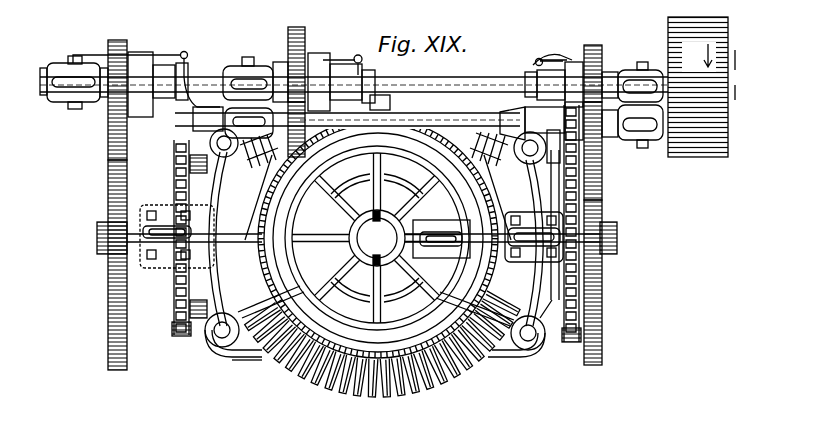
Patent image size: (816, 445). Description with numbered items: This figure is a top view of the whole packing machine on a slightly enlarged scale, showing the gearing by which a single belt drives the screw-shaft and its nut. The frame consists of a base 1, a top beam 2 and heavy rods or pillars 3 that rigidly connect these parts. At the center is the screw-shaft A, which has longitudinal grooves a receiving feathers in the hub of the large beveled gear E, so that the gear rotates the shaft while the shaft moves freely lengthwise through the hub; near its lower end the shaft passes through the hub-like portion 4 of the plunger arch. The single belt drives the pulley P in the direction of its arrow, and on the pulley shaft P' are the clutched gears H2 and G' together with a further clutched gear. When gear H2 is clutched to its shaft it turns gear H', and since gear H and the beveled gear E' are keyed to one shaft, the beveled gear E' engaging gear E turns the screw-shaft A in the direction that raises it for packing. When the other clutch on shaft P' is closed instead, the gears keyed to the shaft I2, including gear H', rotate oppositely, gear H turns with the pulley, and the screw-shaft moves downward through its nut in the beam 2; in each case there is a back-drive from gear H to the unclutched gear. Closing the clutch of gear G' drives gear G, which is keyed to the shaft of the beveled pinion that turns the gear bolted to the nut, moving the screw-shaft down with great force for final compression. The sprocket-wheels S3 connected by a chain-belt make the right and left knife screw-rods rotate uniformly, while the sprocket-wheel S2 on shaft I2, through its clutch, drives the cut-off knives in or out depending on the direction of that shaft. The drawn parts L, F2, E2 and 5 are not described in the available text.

The beveled gear E is at (382, 257).
The screw-shaft A is at (307, 33).
The longitudinal groove a is at (380, 214).
The lower sprocket L is at (300, 140).
The gear G' is at (124, 91).
The gear G is at (107, 265).
The gear H2 is at (603, 56).
The gear H' is at (603, 151).
The gear H is at (600, 282).
The pulley P is at (701, 87).
The pulley shaft P' is at (354, 84).
The hub-like portion 4 is at (556, 58).
The shaft I2 is at (412, 119).
The sprocket-wheel S3 is at (176, 158).
The sprocket-wheel S2 is at (600, 150).
The left pinion F2 is at (97, 236).
The top beam 2 is at (194, 236).
The beveled gear E' is at (502, 218).
The right pinion E2 is at (617, 238).
The rod or pillar 3 is at (205, 340).
The base 1 is at (232, 352).
The right frame arm 5 is at (526, 350).